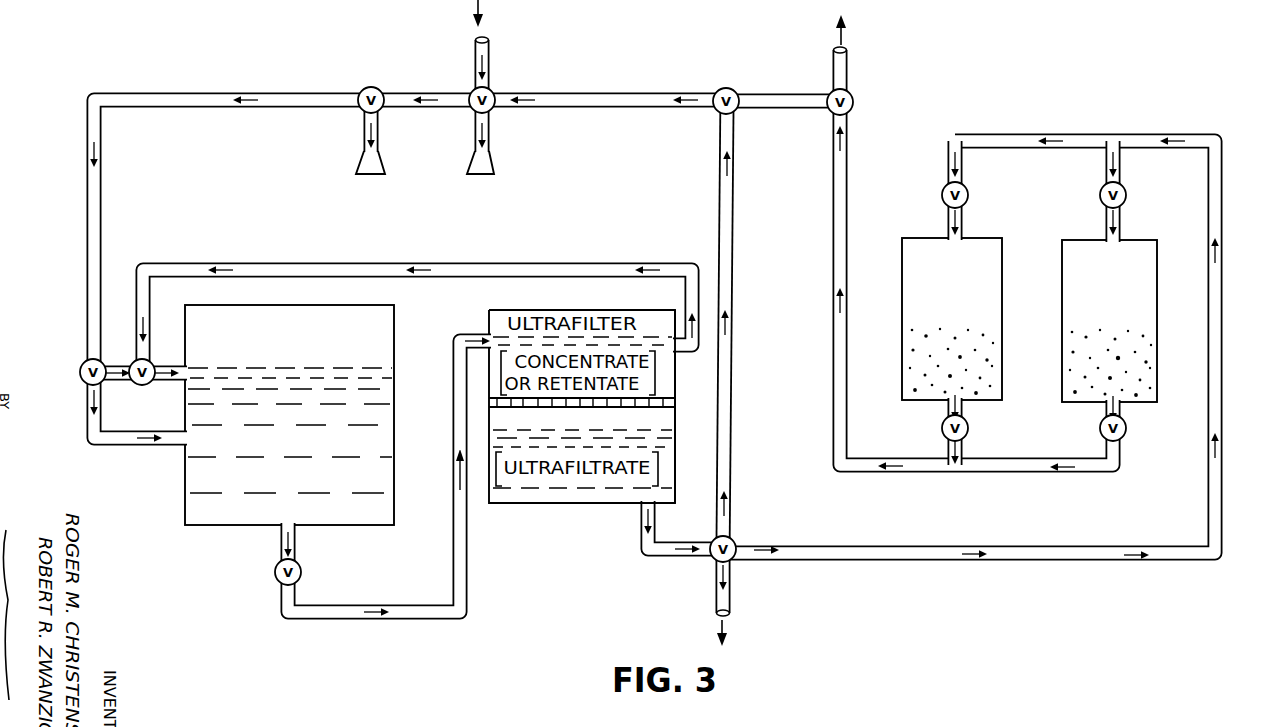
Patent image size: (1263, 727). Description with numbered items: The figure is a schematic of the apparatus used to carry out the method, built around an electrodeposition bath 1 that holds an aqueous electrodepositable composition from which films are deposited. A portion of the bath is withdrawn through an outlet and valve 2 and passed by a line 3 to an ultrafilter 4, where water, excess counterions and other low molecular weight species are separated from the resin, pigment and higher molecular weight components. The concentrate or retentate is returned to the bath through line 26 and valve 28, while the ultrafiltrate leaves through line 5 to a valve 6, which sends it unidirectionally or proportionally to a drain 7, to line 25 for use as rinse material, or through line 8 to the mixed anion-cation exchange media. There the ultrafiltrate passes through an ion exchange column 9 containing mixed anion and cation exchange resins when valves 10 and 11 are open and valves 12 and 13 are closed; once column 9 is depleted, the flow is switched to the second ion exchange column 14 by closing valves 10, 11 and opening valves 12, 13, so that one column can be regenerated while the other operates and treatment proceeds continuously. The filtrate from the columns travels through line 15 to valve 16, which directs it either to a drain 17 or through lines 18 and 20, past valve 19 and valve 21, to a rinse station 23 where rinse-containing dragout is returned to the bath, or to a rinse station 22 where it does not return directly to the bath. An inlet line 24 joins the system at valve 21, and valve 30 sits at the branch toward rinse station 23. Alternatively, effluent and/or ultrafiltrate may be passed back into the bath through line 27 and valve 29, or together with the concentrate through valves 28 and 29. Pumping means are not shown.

The electrodeposition bath 1 is at (395, 333).
The valve 2 is at (276, 573).
The line 3 is at (428, 603).
The ultrafilter 4 is at (488, 318).
The line 5 is at (650, 563).
The valve 6 is at (712, 538).
The drain 7 is at (731, 597).
The line 8 is at (897, 562).
The ion exchange column 9 is at (1157, 368).
The valve 10 is at (1126, 195).
The valve 11 is at (1126, 428).
The valve 12 is at (968, 195).
The valve 13 is at (968, 428).
The ion exchange column 14 is at (999, 372).
The line 15 is at (832, 376).
The valve 16 is at (853, 104).
The drain 17 is at (847, 63).
The line 18 is at (788, 93).
The valve 19 is at (718, 88).
The line 20 is at (615, 92).
The valve 21 is at (490, 89).
The rinse station 22 is at (494, 161).
The rinse station 23 is at (353, 161).
The inlet line 24 is at (474, 55).
The line 25 is at (734, 258).
The line 26 is at (578, 263).
The line 27 is at (103, 207).
The valve 28 is at (138, 386).
The valve 29 is at (81, 377).
The valve 30 is at (366, 87).